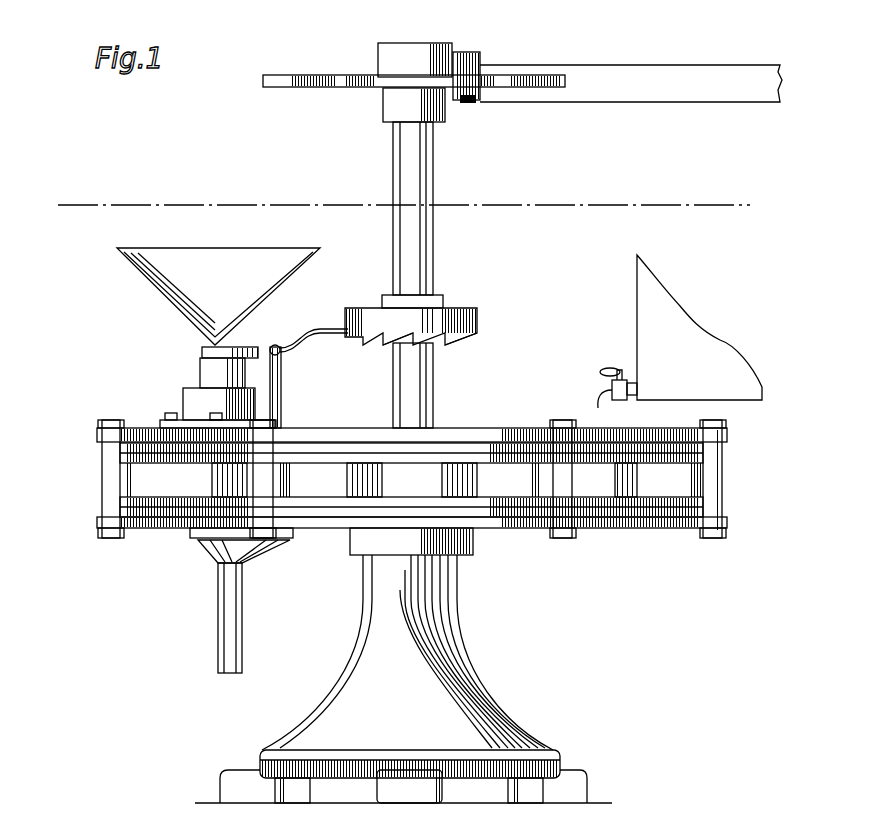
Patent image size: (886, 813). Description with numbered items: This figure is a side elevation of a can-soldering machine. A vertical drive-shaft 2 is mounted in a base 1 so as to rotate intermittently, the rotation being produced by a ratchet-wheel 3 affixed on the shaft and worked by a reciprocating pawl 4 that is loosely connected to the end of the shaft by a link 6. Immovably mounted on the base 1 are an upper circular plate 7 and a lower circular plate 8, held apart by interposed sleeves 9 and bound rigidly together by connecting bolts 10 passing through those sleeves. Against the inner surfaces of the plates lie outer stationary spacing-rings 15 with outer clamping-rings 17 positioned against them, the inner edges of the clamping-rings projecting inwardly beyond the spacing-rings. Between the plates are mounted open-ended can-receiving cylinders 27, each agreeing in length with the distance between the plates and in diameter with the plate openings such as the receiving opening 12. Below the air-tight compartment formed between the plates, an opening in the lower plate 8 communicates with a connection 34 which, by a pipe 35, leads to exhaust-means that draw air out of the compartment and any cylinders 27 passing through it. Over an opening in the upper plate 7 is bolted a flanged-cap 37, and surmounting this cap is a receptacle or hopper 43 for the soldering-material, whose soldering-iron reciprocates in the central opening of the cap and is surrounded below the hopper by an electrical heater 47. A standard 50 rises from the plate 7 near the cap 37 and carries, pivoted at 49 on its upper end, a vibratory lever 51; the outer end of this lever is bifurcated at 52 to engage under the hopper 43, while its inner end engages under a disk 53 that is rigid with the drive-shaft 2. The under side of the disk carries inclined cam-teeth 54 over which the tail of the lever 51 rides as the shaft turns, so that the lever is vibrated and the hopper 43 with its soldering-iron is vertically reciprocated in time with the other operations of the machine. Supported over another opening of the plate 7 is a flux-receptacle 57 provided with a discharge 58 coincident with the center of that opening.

The base 1 is at (470, 654).
The vertical drive-shaft 2 is at (422, 252).
The ratchet-wheel 3 is at (92, 185).
The pawl 4 is at (648, 66).
The link 6 is at (462, 98).
The upper circular plate 7 is at (511, 428).
The lower circular plate 8 is at (83, 452).
The sleeves 9 is at (716, 452).
The connecting bolts 10 is at (93, 508).
The receiving opening 12 is at (83, 520).
The outer stationary spacing-ring 15 is at (447, 447).
The outer clamping-ring 17 is at (590, 456).
The can-receiving cylinder 27 is at (225, 482).
The connection 34 is at (215, 554).
The pipe 35 is at (243, 613).
The flanged-cap 37 is at (196, 401).
The receptacle or hopper 43 is at (218, 252).
The electrical heater 47 is at (200, 376).
The pivot 49 is at (282, 352).
The standard 50 is at (282, 398).
The vibratory lever 51 is at (316, 334).
The bifurcated end 52 is at (202, 352).
The disk 53 is at (477, 328).
The inclined cam-teeth 54 is at (458, 348).
The flux-receptacle 57 is at (699, 327).
The discharge 58 is at (617, 368).